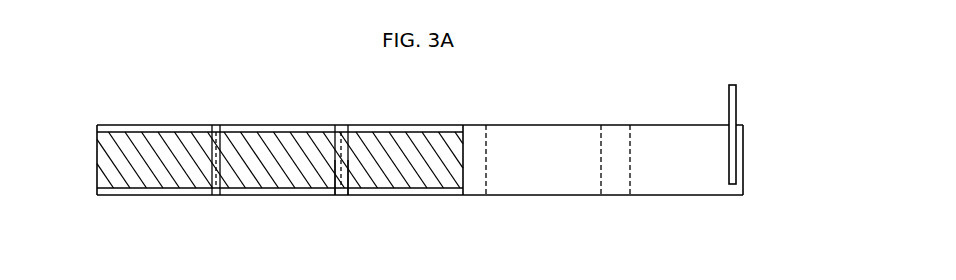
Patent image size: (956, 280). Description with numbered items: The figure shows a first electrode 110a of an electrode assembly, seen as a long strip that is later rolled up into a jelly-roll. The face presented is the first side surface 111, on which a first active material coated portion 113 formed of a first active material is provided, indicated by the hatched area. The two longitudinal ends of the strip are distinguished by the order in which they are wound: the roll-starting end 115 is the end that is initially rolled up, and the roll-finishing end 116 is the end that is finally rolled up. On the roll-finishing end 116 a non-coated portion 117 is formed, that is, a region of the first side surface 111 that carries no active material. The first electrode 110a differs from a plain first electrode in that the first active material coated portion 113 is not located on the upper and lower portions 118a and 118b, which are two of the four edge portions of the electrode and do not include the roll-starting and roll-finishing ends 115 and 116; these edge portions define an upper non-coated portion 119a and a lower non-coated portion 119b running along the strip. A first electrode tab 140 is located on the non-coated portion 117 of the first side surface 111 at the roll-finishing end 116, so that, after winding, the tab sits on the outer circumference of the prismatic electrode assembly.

The first electrode 110a is at (178, 95).
The first side surface 111 is at (237, 125).
The first active material coated portion 113 is at (370, 125).
The roll-starting end 115 is at (84, 163).
The roll-finishing end 116 is at (757, 163).
The non-coated portion 117 is at (563, 143).
The upper portion 118a is at (331, 113).
The lower portion 118b is at (331, 207).
The upper non-coated portion 119a is at (432, 125).
The lower non-coated portion 119b is at (428, 195).
The first electrode tab 140 is at (736, 103).